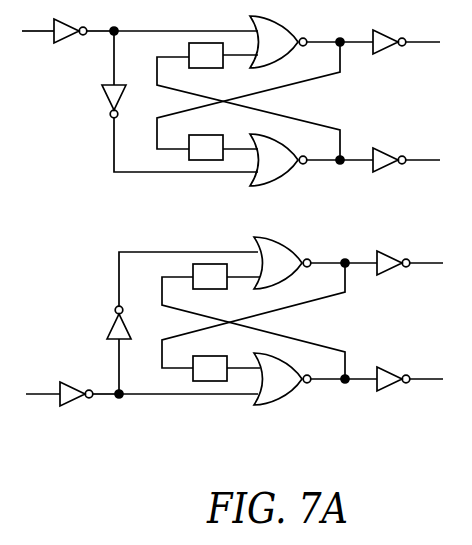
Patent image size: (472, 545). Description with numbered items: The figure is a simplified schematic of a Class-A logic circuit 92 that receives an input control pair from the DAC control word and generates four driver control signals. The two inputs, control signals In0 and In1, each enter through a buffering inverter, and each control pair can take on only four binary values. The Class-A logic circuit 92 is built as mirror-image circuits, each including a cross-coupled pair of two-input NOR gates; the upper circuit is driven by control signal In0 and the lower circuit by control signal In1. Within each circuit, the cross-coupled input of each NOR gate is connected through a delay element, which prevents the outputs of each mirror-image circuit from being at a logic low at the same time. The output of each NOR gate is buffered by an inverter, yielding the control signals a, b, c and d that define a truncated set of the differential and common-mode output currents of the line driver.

The Class-A logic circuit 92 is at (104, 209).
The control signal In0 is at (68, 46).
The control signal In1 is at (72, 384).
The control signal a is at (406, 38).
The control signal b is at (406, 156).
The control signal c is at (410, 260).
The control signal d is at (410, 377).